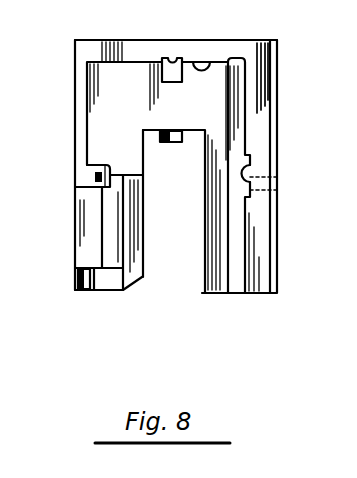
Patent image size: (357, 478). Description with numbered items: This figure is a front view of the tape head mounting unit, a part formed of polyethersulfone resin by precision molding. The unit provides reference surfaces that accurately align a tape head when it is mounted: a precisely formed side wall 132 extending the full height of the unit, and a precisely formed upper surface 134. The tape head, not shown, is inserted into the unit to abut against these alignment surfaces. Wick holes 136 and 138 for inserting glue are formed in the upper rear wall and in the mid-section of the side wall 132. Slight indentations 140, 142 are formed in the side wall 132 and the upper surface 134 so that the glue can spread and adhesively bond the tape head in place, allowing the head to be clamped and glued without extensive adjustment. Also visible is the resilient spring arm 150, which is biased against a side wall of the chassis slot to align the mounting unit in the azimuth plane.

The side wall 132 is at (243, 252).
The upper surface 134 is at (211, 62).
The wick hole 136 is at (74, 162).
The wick hole 138 is at (260, 190).
The indentation 140 is at (166, 59).
The indentation 142 is at (249, 168).
The resilient spring arm 150 is at (143, 277).